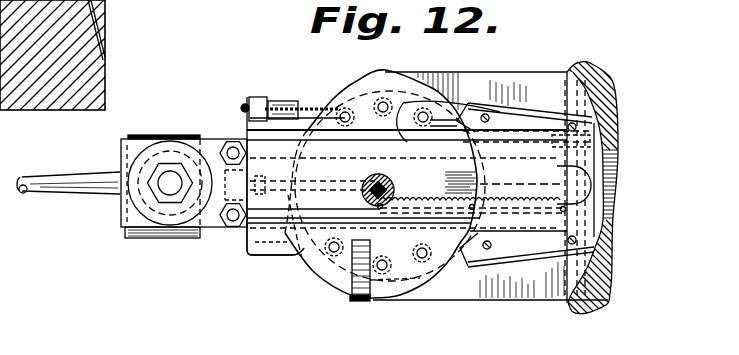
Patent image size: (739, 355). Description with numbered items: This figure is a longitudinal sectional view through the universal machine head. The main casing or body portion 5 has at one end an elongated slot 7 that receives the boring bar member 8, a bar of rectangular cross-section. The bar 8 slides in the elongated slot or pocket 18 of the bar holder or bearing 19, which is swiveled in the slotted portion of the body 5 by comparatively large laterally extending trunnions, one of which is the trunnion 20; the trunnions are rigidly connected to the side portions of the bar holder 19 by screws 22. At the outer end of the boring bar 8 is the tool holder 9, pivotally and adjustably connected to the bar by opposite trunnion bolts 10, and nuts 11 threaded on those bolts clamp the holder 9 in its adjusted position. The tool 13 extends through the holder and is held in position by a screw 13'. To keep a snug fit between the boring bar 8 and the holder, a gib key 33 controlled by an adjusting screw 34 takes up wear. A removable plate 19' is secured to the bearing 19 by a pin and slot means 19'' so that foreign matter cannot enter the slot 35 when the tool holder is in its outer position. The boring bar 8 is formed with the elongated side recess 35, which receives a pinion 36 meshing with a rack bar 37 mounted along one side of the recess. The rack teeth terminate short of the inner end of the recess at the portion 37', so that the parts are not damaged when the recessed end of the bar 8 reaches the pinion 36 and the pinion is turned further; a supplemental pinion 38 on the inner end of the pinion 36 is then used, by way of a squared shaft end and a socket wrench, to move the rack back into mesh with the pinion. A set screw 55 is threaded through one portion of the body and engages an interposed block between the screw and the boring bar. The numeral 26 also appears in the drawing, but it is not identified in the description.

The main casing or body portion 5 is at (588, 63).
The elongated slot 7 is at (490, 80).
The boring bar member 8 is at (285, 232).
The tool holder 9 is at (210, 137).
The trunnion bolts 10 is at (170, 192).
The nuts 11 is at (182, 200).
The tool 13 is at (68, 198).
The screw 13' is at (153, 249).
The elongated slot or pocket 18 is at (404, 102).
The bar holder or bearing 19 is at (396, 305).
The removable plate 19' is at (300, 249).
The pin and slot means 19'' is at (312, 177).
The trunnion 20 is at (338, 85).
The screws 22 is at (350, 117).
The stop 26 is at (521, 11).
The gib key 33 is at (258, 97).
The adjusting screw 34 is at (245, 104).
The elongated side recess 35 is at (460, 160).
The pinion 36 is at (381, 176).
The rack bar 37 is at (472, 216).
The terminating portion of rack teeth 37' is at (563, 185).
The supplemental pinion 38 is at (396, 190).
The set screw 55 is at (356, 302).